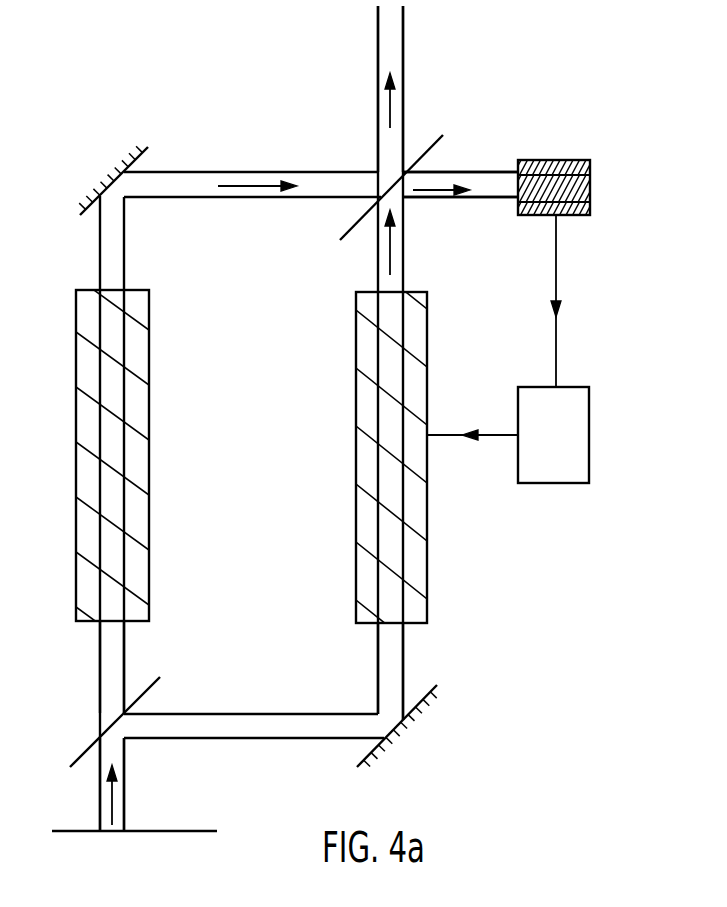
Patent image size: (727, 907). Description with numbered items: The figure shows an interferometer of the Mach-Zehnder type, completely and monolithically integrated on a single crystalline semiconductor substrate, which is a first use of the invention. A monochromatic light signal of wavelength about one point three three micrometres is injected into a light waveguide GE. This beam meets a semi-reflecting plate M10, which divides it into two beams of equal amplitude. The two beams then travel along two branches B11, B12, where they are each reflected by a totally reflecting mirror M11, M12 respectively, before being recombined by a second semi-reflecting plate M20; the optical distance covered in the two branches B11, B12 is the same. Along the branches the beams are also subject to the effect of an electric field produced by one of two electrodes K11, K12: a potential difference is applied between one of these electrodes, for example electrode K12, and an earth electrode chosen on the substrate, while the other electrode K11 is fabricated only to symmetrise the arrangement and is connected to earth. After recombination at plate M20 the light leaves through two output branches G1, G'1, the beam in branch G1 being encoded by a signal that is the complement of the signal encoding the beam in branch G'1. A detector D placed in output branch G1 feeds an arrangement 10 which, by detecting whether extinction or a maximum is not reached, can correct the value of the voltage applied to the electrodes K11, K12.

The totally reflecting mirror M11 is at (108, 158).
The semi-reflecting plate M20 is at (420, 140).
The semi-reflecting plate M10 is at (86, 735).
The totally reflecting mirror M12 is at (415, 742).
The electrode K11 is at (64, 474).
The electrode K12 is at (344, 481).
The detector D is at (575, 153).
The arrangement 10 is at (545, 467).
The output branch G'1 is at (424, 89).
The output branch G1 is at (462, 184).
The light waveguide GE is at (108, 809).
The branch B11 is at (88, 675).
The branch B12 is at (414, 661).